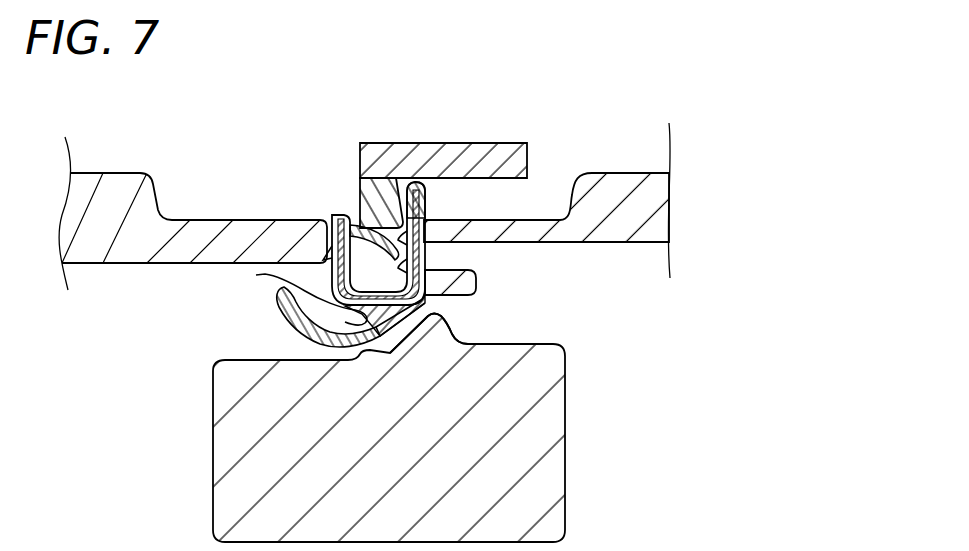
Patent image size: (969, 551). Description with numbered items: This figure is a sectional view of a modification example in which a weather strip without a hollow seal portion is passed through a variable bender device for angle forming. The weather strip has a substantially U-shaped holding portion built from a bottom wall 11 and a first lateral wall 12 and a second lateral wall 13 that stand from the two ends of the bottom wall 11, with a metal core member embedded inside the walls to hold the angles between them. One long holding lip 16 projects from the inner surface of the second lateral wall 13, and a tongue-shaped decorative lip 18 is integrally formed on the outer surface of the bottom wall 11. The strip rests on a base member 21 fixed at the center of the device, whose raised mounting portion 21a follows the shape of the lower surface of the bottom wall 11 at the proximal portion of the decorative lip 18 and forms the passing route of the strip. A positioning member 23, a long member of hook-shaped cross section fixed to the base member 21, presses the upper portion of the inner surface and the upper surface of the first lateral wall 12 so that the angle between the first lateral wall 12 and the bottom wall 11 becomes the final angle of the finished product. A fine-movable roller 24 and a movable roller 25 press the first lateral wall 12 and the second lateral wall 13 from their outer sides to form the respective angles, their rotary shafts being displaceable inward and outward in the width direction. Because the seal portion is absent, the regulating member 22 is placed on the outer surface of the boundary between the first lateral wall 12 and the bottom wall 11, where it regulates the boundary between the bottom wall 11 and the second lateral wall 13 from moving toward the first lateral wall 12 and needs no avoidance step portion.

The bottom wall 11 is at (328, 277).
The first lateral wall 12 is at (409, 194).
The second lateral wall 13 is at (334, 214).
The long holding lip 16 is at (351, 215).
The decorative lip 18 is at (289, 317).
The base member 21 is at (540, 482).
The mounting portion 21a is at (438, 305).
The regulating member 22 is at (478, 283).
The positioning member 23 is at (443, 156).
The fine-movable roller 24 is at (532, 232).
The movable roller 25 is at (193, 230).